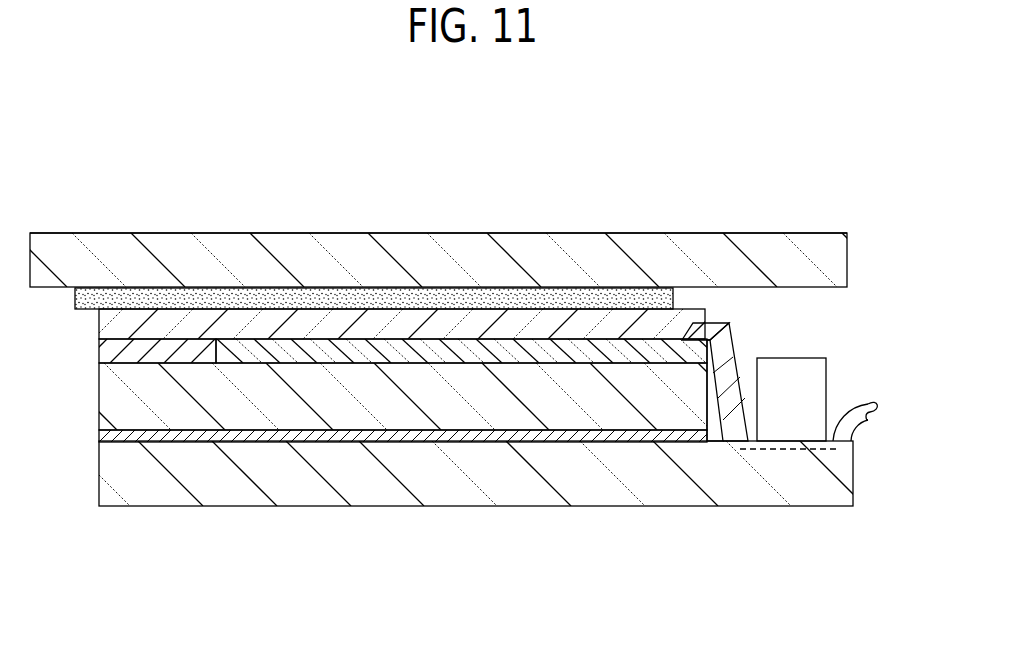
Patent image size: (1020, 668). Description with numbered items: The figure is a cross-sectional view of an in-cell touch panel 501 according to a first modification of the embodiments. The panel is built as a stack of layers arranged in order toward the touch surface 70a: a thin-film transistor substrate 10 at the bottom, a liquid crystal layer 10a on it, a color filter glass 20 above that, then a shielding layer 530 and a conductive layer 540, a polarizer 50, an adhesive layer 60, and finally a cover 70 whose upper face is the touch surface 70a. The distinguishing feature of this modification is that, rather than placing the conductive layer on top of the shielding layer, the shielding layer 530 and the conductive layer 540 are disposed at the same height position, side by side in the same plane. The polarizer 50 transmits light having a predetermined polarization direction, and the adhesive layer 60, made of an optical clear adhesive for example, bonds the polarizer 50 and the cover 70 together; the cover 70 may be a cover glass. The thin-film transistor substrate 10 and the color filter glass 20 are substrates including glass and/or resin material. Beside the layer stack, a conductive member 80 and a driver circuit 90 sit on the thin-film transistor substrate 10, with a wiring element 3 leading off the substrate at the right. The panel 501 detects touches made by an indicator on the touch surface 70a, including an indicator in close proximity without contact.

The in-cell touch panel 501 is at (88, 72).
The cover 70 is at (249, 243).
The touch surface 70a is at (485, 233).
The adhesive layer 60 is at (153, 300).
The polarizer 50 is at (295, 327).
The shielding layer 530 is at (135, 348).
The conductive layer 540 is at (400, 345).
The color filter glass 20 is at (415, 393).
The liquid crystal layer 10a is at (470, 445).
The thin-film transistor substrate 10 is at (578, 462).
The conductive member 80 is at (740, 377).
The driver circuit 90 is at (787, 358).
The wiring 3 is at (862, 402).